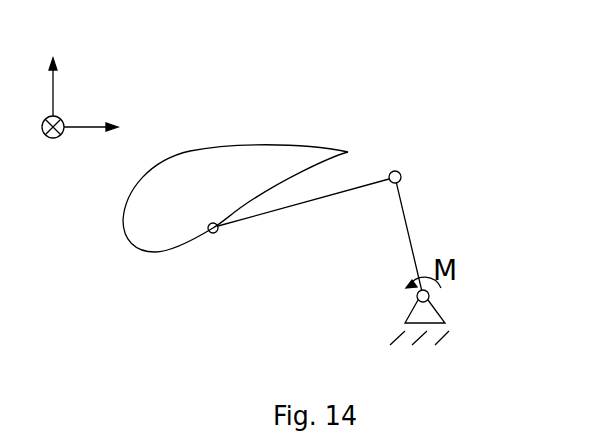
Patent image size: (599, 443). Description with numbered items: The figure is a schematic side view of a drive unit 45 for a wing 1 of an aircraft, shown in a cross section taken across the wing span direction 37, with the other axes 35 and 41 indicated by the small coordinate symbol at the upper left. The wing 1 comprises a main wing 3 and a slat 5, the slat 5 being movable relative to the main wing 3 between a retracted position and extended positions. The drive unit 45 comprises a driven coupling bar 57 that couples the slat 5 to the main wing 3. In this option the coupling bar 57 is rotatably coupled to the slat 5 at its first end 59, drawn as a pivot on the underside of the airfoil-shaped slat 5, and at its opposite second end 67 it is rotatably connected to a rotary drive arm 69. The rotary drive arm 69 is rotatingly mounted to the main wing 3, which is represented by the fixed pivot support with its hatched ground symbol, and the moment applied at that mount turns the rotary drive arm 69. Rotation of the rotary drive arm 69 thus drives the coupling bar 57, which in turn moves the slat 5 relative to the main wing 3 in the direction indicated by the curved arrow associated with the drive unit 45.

The wing 1 is at (310, 60).
The main wing 3 is at (470, 198).
The slat 5 is at (187, 211).
The vertical direction 35 is at (53, 74).
The wing span direction 37 is at (53, 145).
The longitudinal direction 41 is at (108, 128).
The drive unit 45 is at (373, 303).
The coupling bar 57 is at (353, 187).
The first end 59 is at (215, 234).
The second end 67 is at (391, 184).
The rotary drive arm 69 is at (412, 238).